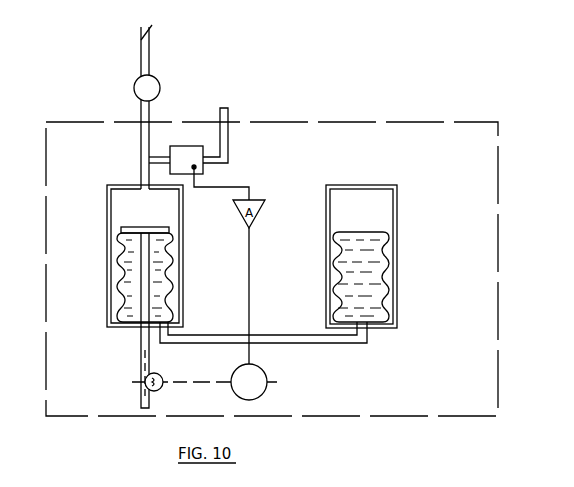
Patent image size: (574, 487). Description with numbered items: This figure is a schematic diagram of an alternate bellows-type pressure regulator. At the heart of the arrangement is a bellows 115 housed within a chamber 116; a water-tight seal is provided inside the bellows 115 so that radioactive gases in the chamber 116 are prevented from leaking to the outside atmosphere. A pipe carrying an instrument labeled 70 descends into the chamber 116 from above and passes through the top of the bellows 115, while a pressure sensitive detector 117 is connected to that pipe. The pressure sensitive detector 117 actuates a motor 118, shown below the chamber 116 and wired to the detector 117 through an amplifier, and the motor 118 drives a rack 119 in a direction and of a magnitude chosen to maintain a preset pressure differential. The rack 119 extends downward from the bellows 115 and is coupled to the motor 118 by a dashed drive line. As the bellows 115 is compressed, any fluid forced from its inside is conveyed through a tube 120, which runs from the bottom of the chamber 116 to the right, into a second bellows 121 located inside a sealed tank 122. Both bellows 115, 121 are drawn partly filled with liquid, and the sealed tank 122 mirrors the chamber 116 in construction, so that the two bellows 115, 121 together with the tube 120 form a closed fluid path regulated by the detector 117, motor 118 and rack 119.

The voltmeter 70 is at (136, 80).
The bellows 115 is at (122, 280).
The chamber 116 is at (117, 203).
The pressure sensitive detector 117 is at (180, 151).
The motor 118 is at (260, 389).
The rack 119 is at (139, 342).
The tube 120 is at (322, 342).
The bellows 121 is at (383, 282).
The sealed tank 122 is at (383, 203).